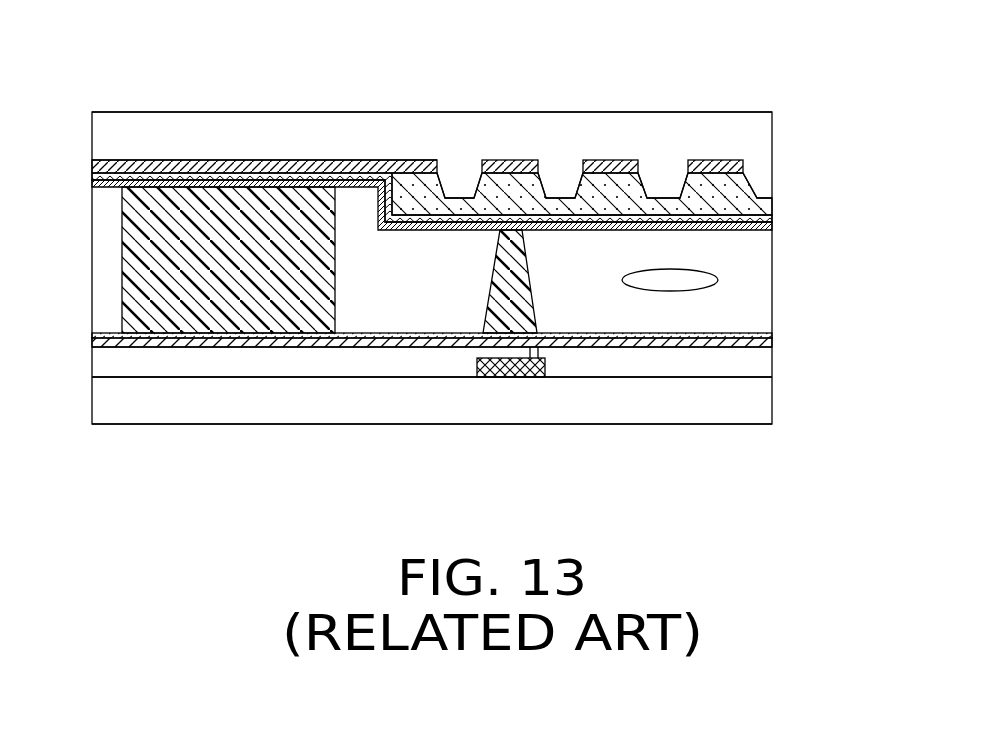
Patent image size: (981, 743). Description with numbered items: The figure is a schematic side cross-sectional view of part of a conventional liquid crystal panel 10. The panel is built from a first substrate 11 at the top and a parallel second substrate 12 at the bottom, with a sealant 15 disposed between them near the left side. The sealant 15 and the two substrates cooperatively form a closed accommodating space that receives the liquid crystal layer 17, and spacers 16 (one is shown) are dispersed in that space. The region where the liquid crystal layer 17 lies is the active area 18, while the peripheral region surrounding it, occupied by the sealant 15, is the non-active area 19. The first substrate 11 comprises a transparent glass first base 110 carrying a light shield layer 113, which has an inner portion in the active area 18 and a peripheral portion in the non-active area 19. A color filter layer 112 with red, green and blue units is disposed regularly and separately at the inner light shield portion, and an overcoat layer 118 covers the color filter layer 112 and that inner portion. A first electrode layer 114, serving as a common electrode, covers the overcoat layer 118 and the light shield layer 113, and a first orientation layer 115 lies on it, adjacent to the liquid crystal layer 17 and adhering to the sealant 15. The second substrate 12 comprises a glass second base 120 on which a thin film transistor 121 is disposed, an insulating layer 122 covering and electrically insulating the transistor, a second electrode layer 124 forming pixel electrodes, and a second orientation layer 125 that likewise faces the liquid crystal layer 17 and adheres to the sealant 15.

The liquid crystal panel 10 is at (341, 32).
The first substrate 11 is at (847, 103).
The second substrate 12 is at (865, 287).
The sealant 15 is at (135, 278).
The spacers 16 is at (510, 290).
The liquid crystal layer 17 is at (744, 281).
The active area 18 is at (772, 433).
The non-active area 19 is at (330, 433).
The first base 110 is at (219, 133).
The color filter layer 112 is at (672, 170).
The light shield layer 113 is at (725, 165).
The first electrode layer 114 is at (766, 215).
The first orientation layer 115 is at (758, 224).
The overcoat layer 118 is at (607, 173).
The second base 120 is at (753, 413).
The thin film transistor 121 is at (487, 358).
The insulating layer 122 is at (753, 366).
The second electrode layer 124 is at (770, 345).
The second orientation layer 125 is at (755, 332).